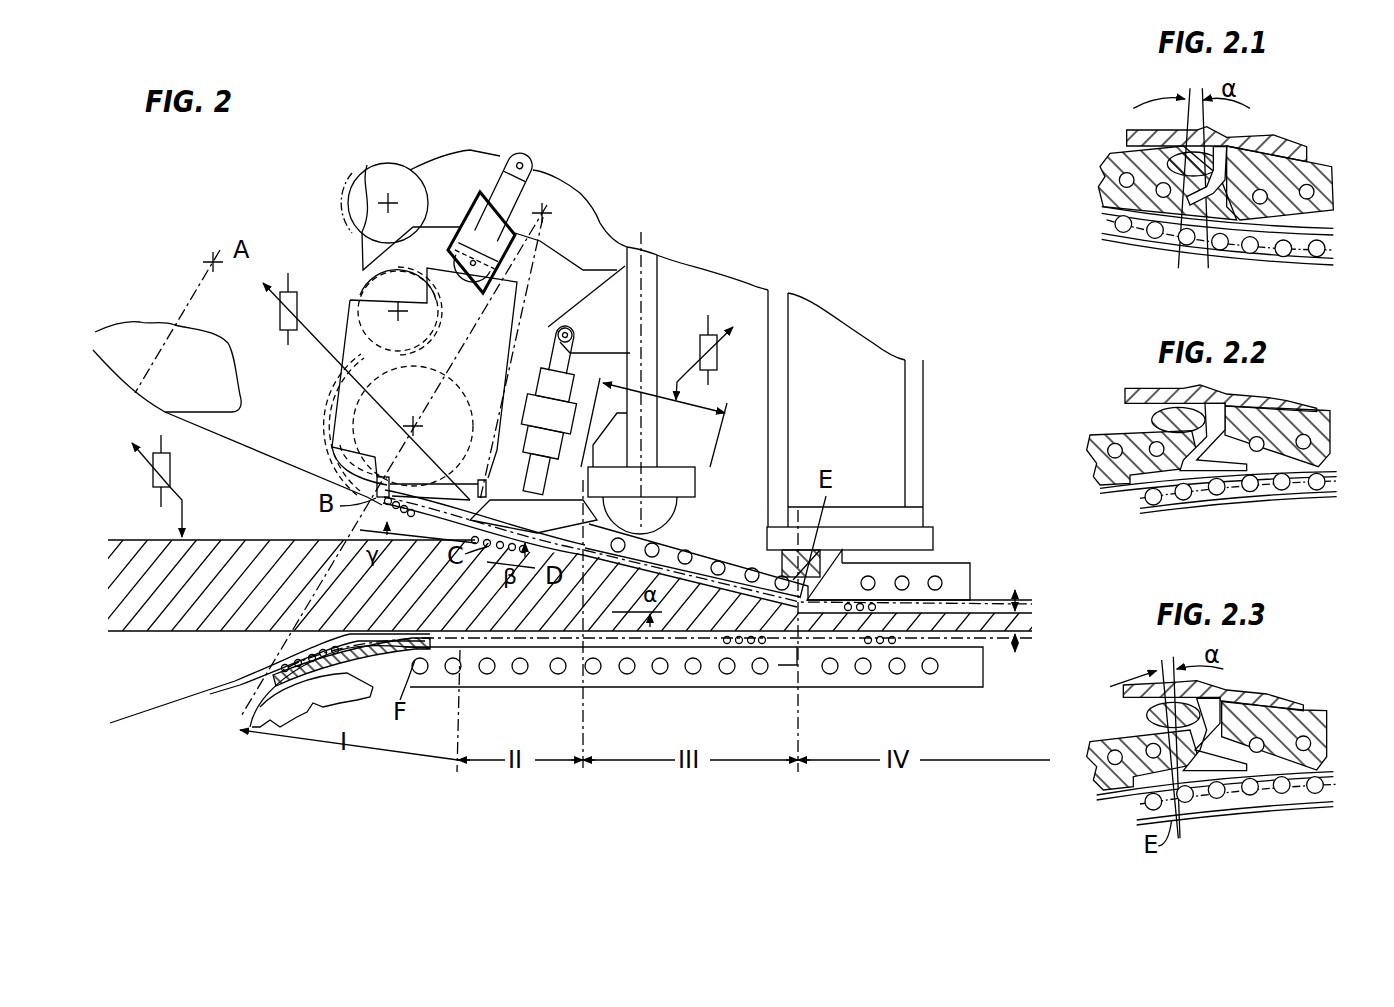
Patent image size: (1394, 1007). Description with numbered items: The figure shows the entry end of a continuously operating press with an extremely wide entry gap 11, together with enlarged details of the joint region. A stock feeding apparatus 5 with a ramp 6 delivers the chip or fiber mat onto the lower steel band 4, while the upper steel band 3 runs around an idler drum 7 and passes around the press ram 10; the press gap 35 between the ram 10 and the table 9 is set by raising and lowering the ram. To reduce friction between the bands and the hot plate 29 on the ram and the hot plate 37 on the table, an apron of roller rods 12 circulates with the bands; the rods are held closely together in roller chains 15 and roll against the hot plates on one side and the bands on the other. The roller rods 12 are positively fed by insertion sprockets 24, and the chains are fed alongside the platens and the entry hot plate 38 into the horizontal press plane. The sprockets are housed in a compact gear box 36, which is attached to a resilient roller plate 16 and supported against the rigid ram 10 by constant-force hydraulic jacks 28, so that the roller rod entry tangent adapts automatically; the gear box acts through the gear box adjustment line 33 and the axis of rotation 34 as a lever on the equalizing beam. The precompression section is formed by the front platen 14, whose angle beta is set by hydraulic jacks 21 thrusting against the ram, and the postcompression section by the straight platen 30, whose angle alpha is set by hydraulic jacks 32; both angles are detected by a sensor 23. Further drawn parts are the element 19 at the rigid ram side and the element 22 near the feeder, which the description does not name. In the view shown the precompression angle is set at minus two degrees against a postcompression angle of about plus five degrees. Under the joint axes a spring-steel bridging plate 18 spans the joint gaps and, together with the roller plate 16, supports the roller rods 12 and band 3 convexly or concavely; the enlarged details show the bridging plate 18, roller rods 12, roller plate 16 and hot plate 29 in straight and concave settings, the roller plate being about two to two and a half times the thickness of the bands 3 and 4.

In FIG. 2, the upper steel band 3 is at (243, 444).
In FIG. 2.3, the upper steel band 3 is at (1235, 827).
In FIG. 2, the lower steel band 4 is at (221, 693).
In FIG. 2, the stock feeding apparatus 5 is at (175, 676).
In FIG. 2, the ramp 6 is at (290, 647).
In FIG. 2, the idler drum 7 is at (200, 376).
In FIG. 2, the table 9 is at (847, 736).
In FIG. 2, the press ram 10 is at (855, 409).
In FIG. 2, the entry gap 11 is at (255, 501).
In FIG. 2, the roller rods 12 is at (866, 644).
In FIG. 2.3, the roller rods 12 is at (1238, 819).
In FIG. 2, the front platen 14 is at (537, 525).
In FIG. 2, the roller chains 15 is at (353, 178).
In FIG. 2, the roller plate 16 is at (962, 612).
In FIG. 2.1, the roller plate 16 is at (1243, 231).
In FIG. 2.2, the roller plate 16 is at (1218, 516).
In FIG. 2.3, the roller plate 16 is at (1215, 816).
In FIG. 2, the bridging plate 18 is at (593, 555).
In FIG. 2.1, the bridging plate 18 is at (1198, 224).
In FIG. 2.2, the bridging plate 18 is at (1199, 481).
In FIG. 2, the frame post 19 is at (912, 478).
In FIG. 2, the hydraulic jacks 21 is at (536, 396).
In FIG. 2, the control valve 22 is at (172, 471).
In FIG. 2, the sensor 23 is at (700, 374).
In FIG. 2, the insertion sprockets 24 is at (356, 414).
In FIG. 2, the hydraulic jacks 28 is at (500, 190).
In FIG. 2, the hot plate 29 is at (958, 566).
In FIG. 2.1, the hot plate 29 is at (1305, 183).
In FIG. 2.3, the hot plate 29 is at (1224, 709).
In FIG. 2, the platen 30 is at (708, 560).
In FIG. 2.1, the platen 30 is at (1146, 171).
In FIG. 2, the hydraulic jacks 32 is at (668, 470).
In FIG. 2, the gear box adjustment line 33 is at (381, 477).
In FIG. 2, the axis of rotation 34 is at (433, 482).
In FIG. 2, the press gap 35 is at (668, 652).
In FIG. 2, the gear box 36 is at (478, 322).
In FIG. 2, the hot plate 37 is at (945, 672).
In FIG. 2, the entry hot plate 38 is at (716, 673).